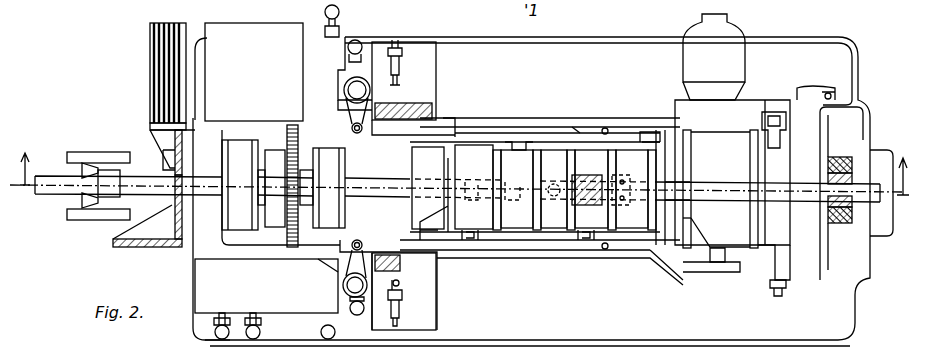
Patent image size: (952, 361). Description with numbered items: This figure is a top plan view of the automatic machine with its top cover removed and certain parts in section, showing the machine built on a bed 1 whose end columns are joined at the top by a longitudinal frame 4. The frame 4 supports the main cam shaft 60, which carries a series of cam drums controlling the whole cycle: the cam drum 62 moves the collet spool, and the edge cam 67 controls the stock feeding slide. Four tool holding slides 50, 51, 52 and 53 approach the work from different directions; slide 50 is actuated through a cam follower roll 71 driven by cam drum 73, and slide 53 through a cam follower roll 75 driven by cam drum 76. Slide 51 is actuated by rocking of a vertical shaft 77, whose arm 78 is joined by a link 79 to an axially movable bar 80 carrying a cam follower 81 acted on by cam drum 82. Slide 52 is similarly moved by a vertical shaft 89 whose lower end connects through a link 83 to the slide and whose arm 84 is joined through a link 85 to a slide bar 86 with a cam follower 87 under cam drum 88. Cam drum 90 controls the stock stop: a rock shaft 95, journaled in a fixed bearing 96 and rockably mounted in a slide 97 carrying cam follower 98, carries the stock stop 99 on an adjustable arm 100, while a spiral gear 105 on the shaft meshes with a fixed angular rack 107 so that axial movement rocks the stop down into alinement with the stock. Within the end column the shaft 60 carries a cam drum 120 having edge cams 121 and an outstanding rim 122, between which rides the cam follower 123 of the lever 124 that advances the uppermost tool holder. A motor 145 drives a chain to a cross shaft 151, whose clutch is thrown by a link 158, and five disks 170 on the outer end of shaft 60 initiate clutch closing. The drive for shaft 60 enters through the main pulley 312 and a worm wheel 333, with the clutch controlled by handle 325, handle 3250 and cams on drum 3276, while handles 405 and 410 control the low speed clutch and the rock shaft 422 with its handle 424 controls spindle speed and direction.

The bed 1 is at (840, 70).
The longitudinal frame 4 is at (464, 177).
The tool holding slide 50 is at (414, 103).
The tool holding slide 51 is at (420, 61).
The tool holding slide 52 is at (437, 318).
The tool holding slide 53 is at (392, 275).
The main cam shaft 60 is at (58, 195).
The cam drum 62 is at (242, 258).
The edge cam 67 is at (118, 242).
The cam follower roll 71 is at (516, 142).
The cam drum 73 is at (504, 150).
The cam follower roll 75 is at (472, 242).
The cam drum 76 is at (470, 150).
The vertical shaft 77 is at (346, 88).
The arm 78 is at (352, 122).
The link 79 is at (580, 128).
The axially movable bar 80 is at (622, 140).
The cam follower 81 is at (675, 100).
The cam drum 82 is at (640, 166).
The link 83 is at (430, 300).
The arm 84 is at (350, 252).
The link 85 is at (547, 245).
The slide bar 86 is at (636, 252).
The cam follower 87 is at (582, 242).
The cam drum 88 is at (574, 225).
The vertical shaft 89 is at (343, 289).
The cam drum 90 is at (548, 142).
The rock shaft 95 is at (523, 212).
The fixed bearing 96 is at (428, 188).
The slide 97 is at (553, 212).
The cam follower 98 is at (550, 190).
The stock stop 99 is at (432, 199).
The arm 100 is at (508, 242).
The spiral gear 105 is at (587, 190).
The angular rack 107 is at (632, 190).
The cam drum 120 is at (718, 140).
The edge cam 121 is at (695, 242).
The outstanding rim 122 is at (760, 250).
The cam follower 123 is at (716, 248).
The lever 124 is at (722, 262).
The motor 145 is at (734, 38).
The cross shaft 151 is at (782, 298).
The link 158 is at (771, 112).
The disks 170 is at (838, 160).
The main pulley 312 is at (158, 56).
The actuating handle 325 is at (325, 12).
The worm wheel 333 is at (291, 125).
The handle 405 is at (357, 316).
The actuating handle 410 is at (358, 40).
The rock shaft 422 is at (257, 318).
The handle 424 is at (214, 338).
The actuating handle 3250 is at (325, 331).
The drum 3276 is at (338, 168).